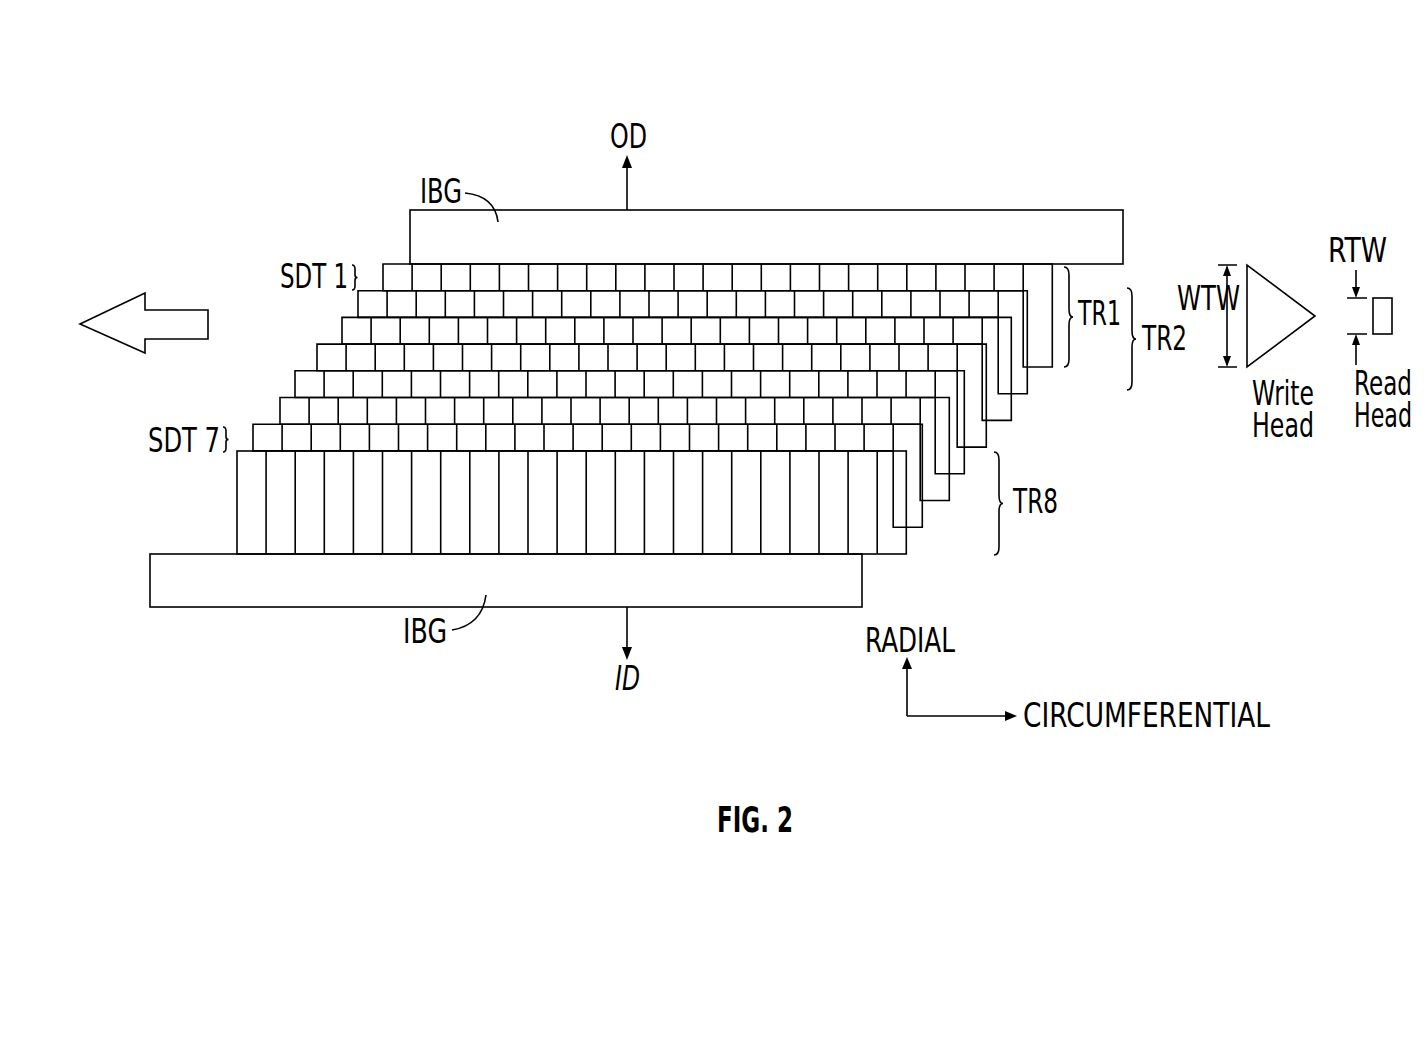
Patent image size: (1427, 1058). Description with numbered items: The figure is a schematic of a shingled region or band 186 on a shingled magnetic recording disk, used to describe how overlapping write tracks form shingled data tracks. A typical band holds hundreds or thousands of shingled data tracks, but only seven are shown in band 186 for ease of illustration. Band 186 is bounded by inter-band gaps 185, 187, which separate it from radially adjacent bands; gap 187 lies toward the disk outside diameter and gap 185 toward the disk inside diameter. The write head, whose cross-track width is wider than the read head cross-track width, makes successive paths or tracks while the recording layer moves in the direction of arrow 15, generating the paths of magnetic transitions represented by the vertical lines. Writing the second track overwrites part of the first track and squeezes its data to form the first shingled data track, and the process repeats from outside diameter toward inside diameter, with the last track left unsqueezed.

The band 186 is at (316, 93).
The inter-band gap 187 is at (948, 225).
The inter-band gap 185 is at (700, 595).
The arrow 15 is at (167, 310).